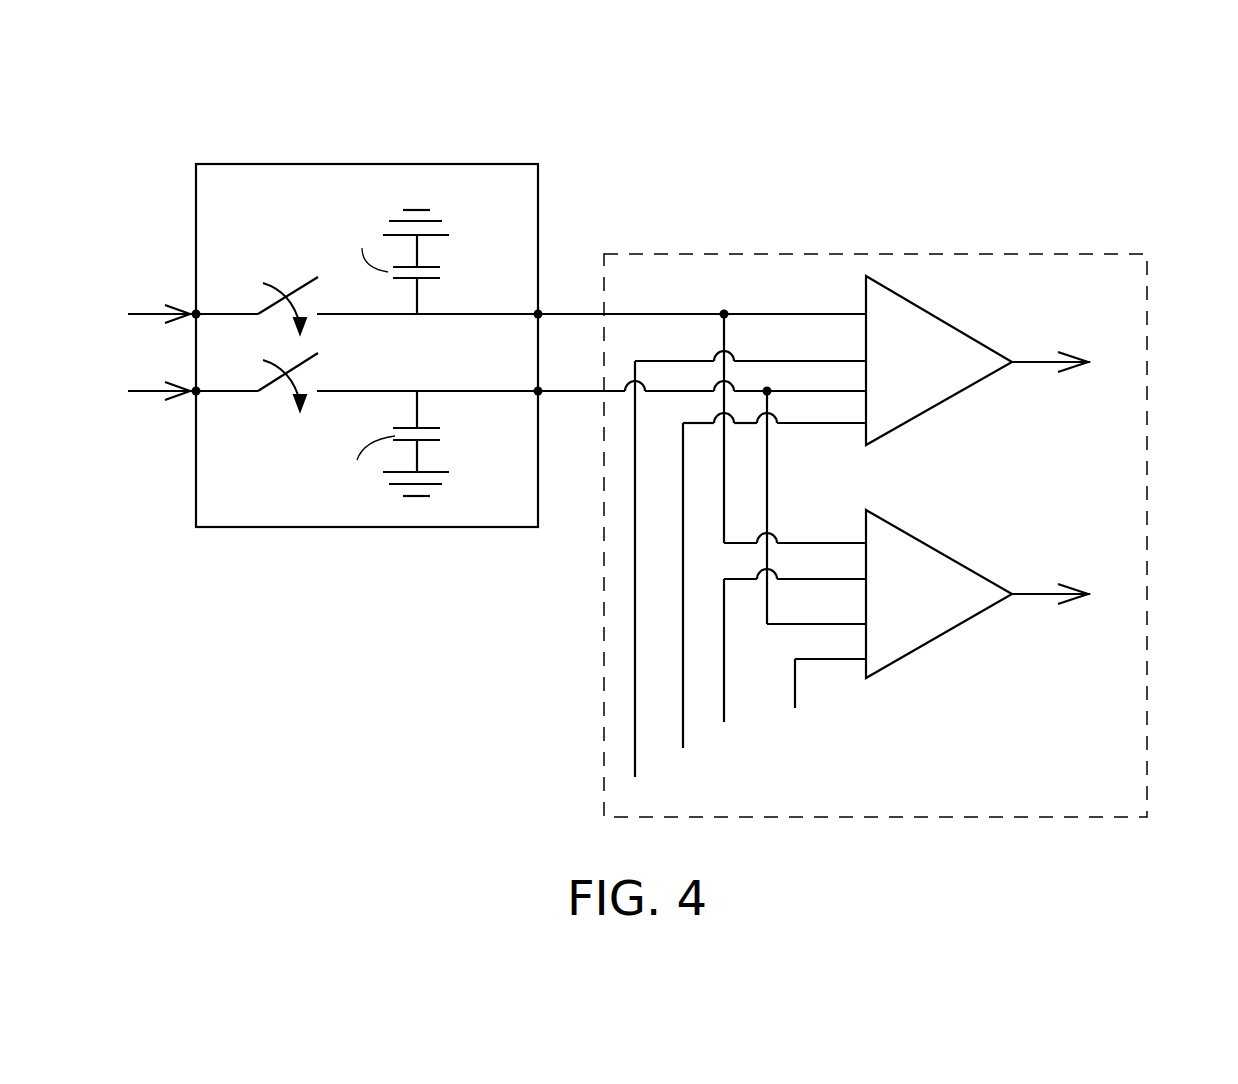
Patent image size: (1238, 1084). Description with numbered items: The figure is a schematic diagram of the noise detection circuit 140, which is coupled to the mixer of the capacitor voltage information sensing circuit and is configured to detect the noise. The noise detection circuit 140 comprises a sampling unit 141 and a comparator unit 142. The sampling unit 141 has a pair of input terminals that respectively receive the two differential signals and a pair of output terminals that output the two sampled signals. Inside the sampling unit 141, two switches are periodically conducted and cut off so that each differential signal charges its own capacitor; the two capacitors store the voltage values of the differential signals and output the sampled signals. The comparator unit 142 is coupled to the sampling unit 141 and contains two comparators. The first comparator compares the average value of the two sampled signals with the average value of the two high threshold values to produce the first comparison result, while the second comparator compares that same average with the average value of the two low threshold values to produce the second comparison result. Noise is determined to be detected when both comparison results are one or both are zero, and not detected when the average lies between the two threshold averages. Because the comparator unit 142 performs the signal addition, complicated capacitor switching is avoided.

The noise detection circuit 140 is at (1035, 141).
The sampling unit 141 is at (421, 164).
The comparator unit 142 is at (1100, 254).